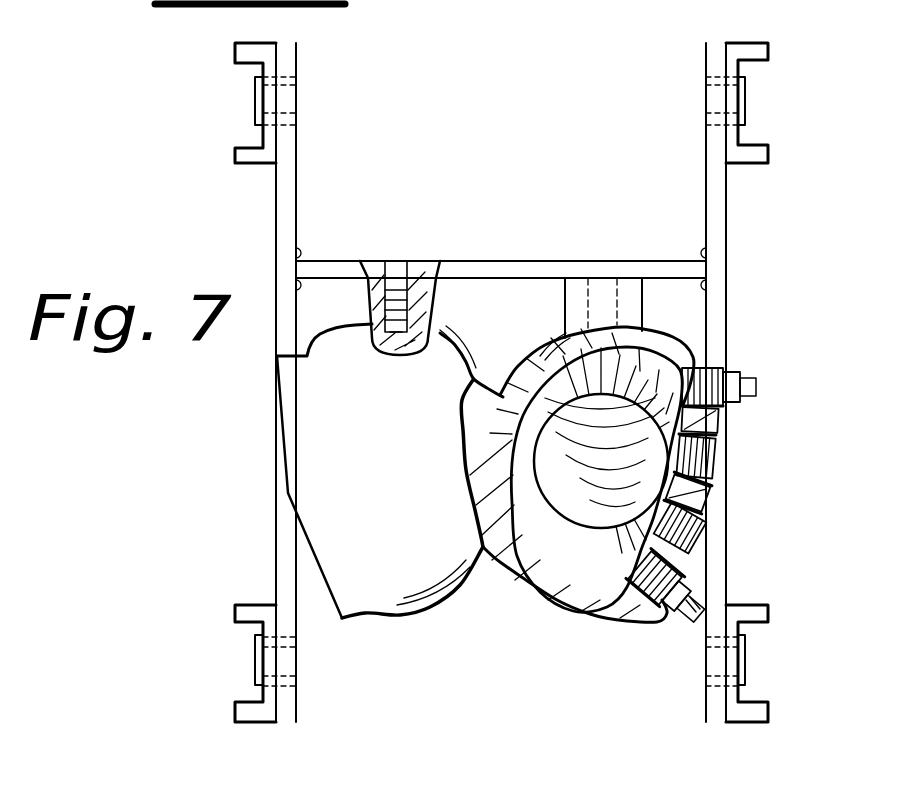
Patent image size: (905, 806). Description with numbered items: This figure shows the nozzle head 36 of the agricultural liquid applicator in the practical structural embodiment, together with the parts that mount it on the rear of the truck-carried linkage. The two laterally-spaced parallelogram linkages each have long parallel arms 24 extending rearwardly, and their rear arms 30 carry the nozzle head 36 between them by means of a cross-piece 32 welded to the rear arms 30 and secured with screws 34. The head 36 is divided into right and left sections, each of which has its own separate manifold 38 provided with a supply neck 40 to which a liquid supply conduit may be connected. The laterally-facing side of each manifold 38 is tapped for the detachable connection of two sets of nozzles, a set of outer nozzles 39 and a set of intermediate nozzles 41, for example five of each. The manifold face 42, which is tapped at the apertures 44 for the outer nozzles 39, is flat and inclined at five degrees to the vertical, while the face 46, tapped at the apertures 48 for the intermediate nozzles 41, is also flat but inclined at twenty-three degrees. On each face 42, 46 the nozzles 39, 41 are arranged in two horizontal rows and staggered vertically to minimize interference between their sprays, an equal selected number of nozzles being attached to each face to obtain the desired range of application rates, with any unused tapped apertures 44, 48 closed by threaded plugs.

The long parallel arms 24 is at (738, 43).
The rear arms 30 is at (276, 212).
The cross-piece 32 is at (494, 261).
The screws 34 is at (395, 261).
The nozzle head 36 is at (407, 620).
The manifold 38 is at (440, 603).
The outer nozzles 39 is at (690, 388).
The supply neck 40 is at (548, 325).
The intermediate nozzles 41 is at (690, 616).
The manifold face 42 is at (714, 430).
The tapped apertures 44 is at (725, 470).
The manifold face 46 is at (672, 566).
The tapped apertures 48 is at (683, 528).